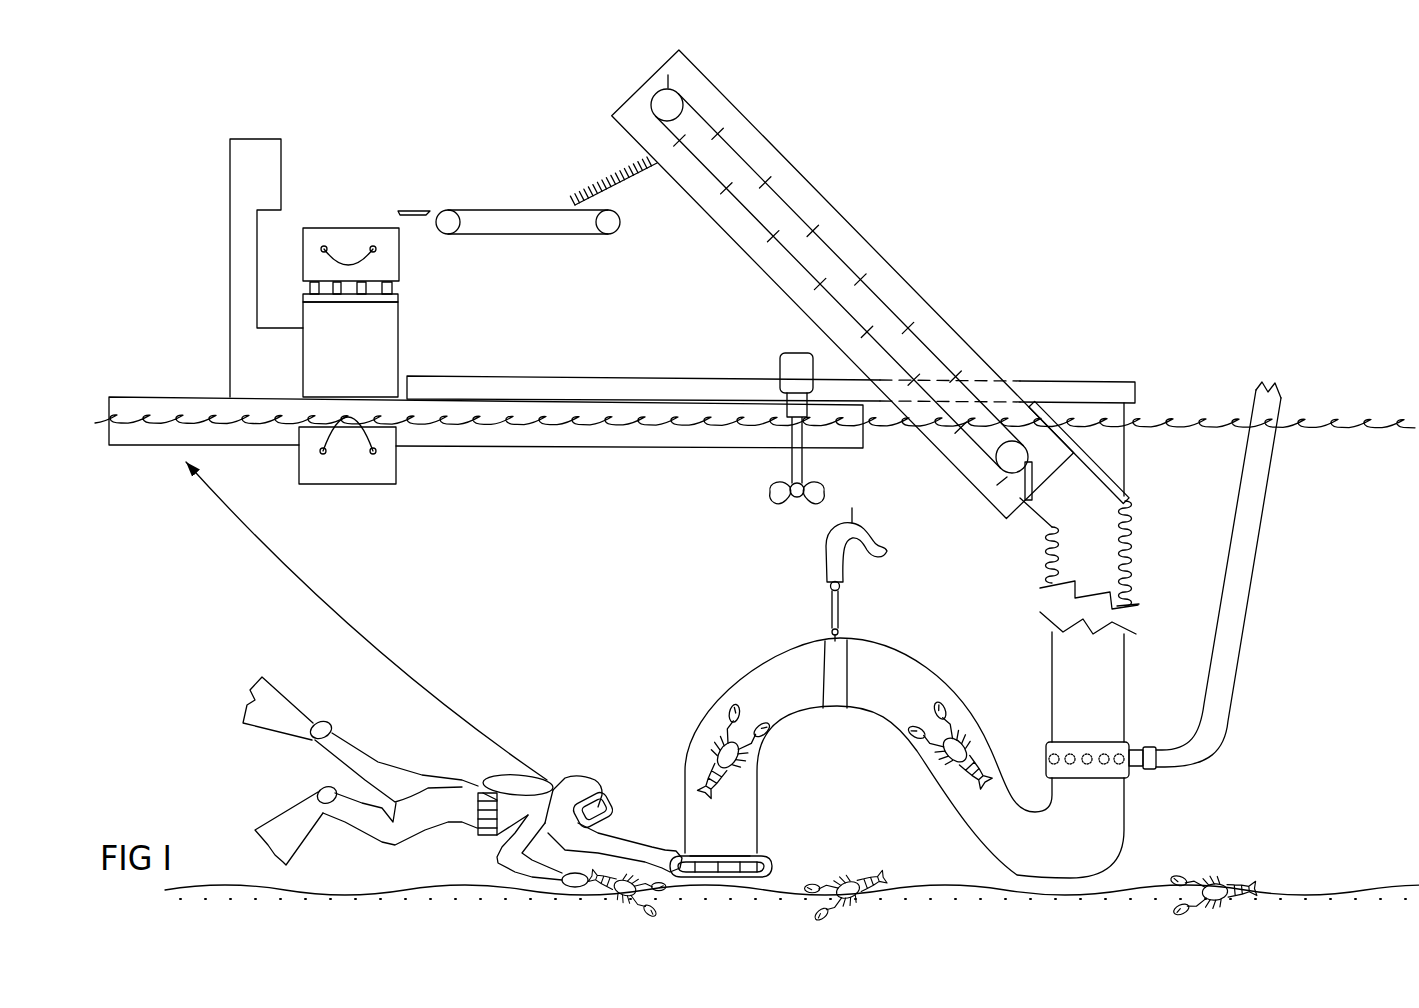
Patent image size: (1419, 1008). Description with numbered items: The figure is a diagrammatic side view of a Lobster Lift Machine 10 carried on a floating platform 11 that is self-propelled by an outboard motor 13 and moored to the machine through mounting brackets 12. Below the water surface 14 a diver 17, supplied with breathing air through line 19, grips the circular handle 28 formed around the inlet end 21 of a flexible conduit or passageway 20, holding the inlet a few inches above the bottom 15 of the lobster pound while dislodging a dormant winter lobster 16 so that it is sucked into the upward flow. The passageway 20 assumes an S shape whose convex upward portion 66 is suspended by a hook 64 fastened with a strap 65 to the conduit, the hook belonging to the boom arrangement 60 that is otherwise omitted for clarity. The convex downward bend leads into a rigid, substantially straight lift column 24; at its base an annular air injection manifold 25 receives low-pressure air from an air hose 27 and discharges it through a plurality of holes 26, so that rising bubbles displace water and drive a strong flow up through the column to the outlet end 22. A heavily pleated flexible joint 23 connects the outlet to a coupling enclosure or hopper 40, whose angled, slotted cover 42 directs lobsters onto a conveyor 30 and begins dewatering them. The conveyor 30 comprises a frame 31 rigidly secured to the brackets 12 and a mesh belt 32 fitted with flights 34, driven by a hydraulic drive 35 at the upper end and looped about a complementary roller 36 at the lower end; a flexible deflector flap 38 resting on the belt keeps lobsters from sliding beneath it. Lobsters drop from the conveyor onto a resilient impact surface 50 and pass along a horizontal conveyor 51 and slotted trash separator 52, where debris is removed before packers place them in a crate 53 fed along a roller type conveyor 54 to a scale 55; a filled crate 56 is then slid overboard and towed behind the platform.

The Lobster Lift Machine 10 is at (1217, 166).
The floating platform 11 is at (218, 392).
The mounting brackets 12 is at (580, 383).
The outboard motor 13 is at (781, 351).
The water surface 14 is at (100, 414).
The bottom or floor of the lobster pound 15 is at (437, 888).
The dormant winter lobster 16 is at (940, 775).
The diver 17 is at (425, 775).
The line 19 is at (395, 660).
The flexible conduit or passageway 20 is at (897, 730).
The inlet end 21 is at (722, 860).
The outlet end 22 is at (1088, 548).
The flexible joint or pleated accordion section 23 is at (1135, 590).
The lift column 24 is at (1108, 692).
The air injection manifold 25 is at (1135, 775).
The holes 26 is at (1108, 764).
The air hose 27 is at (1242, 553).
The circular handle 28 is at (782, 866).
The conveyor 30 is at (905, 325).
The frame 31 is at (947, 316).
The moving belt 32 is at (938, 378).
The flights or tab sections 34 is at (835, 220).
The hydraulic drive 35 is at (683, 100).
The complementary roller 36 is at (1018, 446).
The flexible deflector flap 38 is at (1023, 488).
The coupling enclosure or hopper 40 is at (1123, 480).
The angled upper surface or cover 42 is at (1108, 470).
The resilient impact surface 50 is at (636, 177).
The horizontal conveyor 51 is at (507, 211).
The trash or waste materials separator 52 is at (411, 208).
The crate 53 is at (322, 232).
The roller type conveyor 54 is at (383, 290).
The scale 55 is at (275, 160).
The crate 56 is at (358, 460).
The boom arrangement 60 is at (855, 525).
The hook 64 is at (820, 545).
The strap 65 is at (830, 648).
The convex upward portion 66 is at (836, 712).